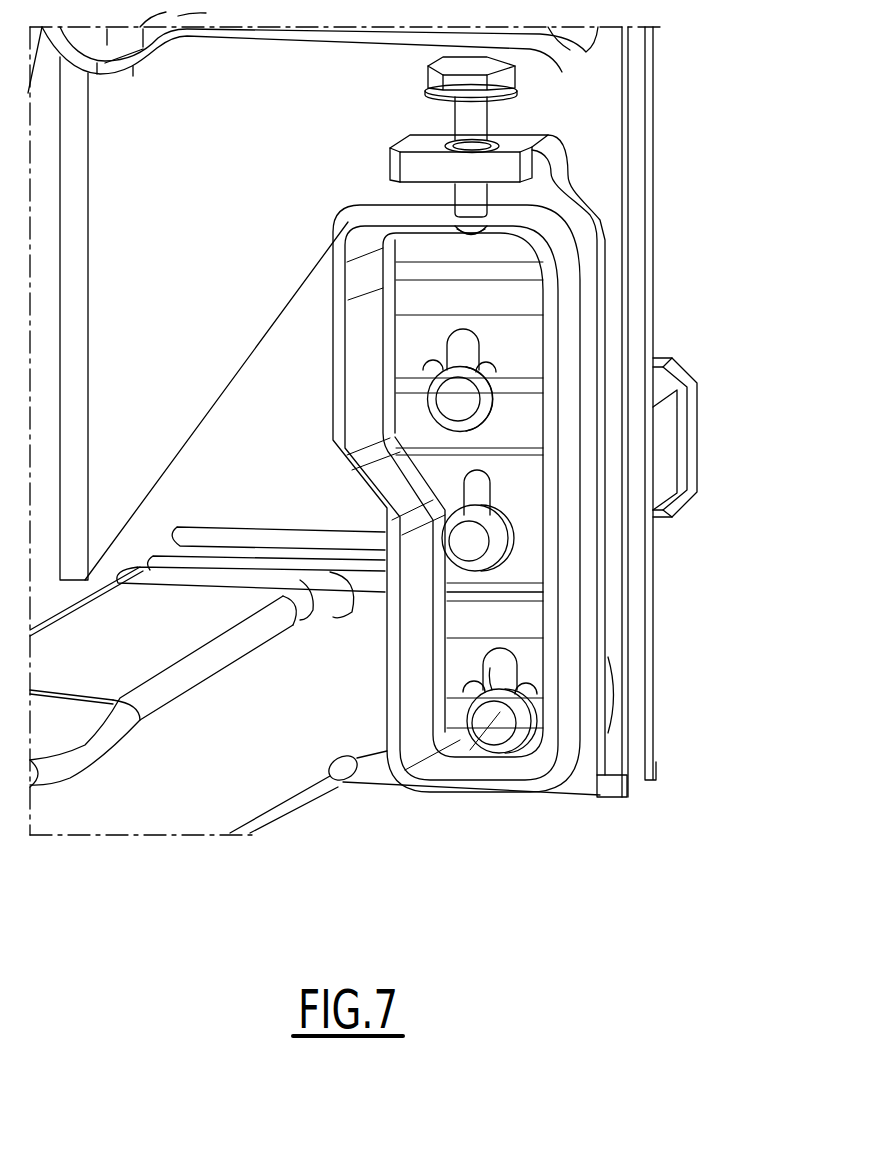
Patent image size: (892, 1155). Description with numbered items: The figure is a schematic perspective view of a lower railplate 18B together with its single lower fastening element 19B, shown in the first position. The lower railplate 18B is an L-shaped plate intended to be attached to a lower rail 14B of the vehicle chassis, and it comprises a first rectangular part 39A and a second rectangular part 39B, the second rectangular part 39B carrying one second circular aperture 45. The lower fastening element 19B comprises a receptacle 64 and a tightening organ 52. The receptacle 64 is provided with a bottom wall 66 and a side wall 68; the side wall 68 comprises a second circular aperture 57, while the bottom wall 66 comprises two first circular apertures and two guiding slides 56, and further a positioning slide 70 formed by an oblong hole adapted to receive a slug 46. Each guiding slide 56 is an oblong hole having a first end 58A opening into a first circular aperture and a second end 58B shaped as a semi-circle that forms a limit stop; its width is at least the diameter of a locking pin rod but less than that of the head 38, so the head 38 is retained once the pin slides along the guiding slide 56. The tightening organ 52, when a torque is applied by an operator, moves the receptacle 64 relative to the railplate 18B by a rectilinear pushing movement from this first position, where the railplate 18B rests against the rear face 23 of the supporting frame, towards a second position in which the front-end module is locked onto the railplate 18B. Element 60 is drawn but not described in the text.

The lower rail 14B is at (262, 777).
The lower railplate 18B is at (232, 343).
The lower fastening element 19B is at (594, 326).
The rear face 23 is at (190, 123).
The head 38 is at (460, 403).
The first rectangular part 39A is at (197, 480).
The second rectangular part 39B is at (417, 167).
The second circular aperture 45 is at (500, 147).
The slug 46 is at (467, 543).
The tightening organ 52 is at (407, 78).
The guiding slide 56 is at (440, 335).
The second circular aperture 57 is at (460, 237).
The first end 58A is at (430, 357).
The second end 58B is at (467, 333).
The shaft 60 is at (467, 117).
The receptacle 64 is at (660, 365).
The bottom wall 66 is at (510, 598).
The side wall 68 is at (572, 213).
The positioning slide 70 is at (483, 492).